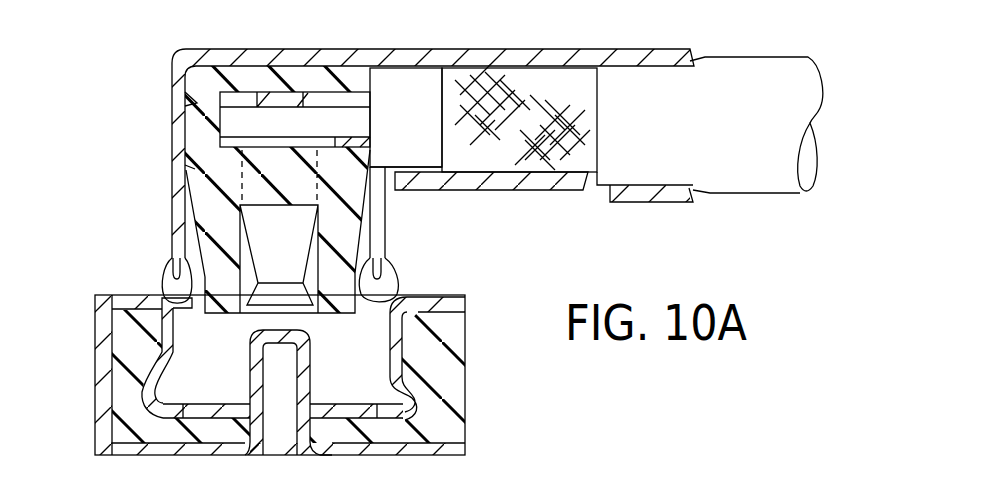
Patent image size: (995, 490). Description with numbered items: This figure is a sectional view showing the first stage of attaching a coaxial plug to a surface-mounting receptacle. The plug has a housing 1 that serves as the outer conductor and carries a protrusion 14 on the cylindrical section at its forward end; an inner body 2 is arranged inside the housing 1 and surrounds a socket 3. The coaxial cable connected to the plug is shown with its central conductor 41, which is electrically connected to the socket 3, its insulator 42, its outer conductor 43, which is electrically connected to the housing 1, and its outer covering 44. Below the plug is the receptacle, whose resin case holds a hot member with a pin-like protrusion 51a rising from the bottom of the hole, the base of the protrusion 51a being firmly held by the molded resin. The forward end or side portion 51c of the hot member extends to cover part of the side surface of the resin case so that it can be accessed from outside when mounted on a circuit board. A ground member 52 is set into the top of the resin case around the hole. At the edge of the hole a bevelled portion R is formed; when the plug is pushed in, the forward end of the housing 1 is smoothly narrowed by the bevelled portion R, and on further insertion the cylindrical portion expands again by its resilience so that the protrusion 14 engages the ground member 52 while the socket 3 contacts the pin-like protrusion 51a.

The housing 1 is at (282, 52).
The insulating body 2 is at (198, 185).
The socket 3 is at (263, 247).
The protrusion 14 is at (162, 272).
The central conductor 41 is at (307, 118).
The insulator 42 is at (400, 80).
The outer conductor 43 is at (515, 72).
The outer covering 44 is at (767, 67).
The pin-like protrusion 51a is at (340, 351).
The side portion 51c is at (95, 418).
The ground member 52 is at (437, 295).
The bevelled portion R is at (147, 323).